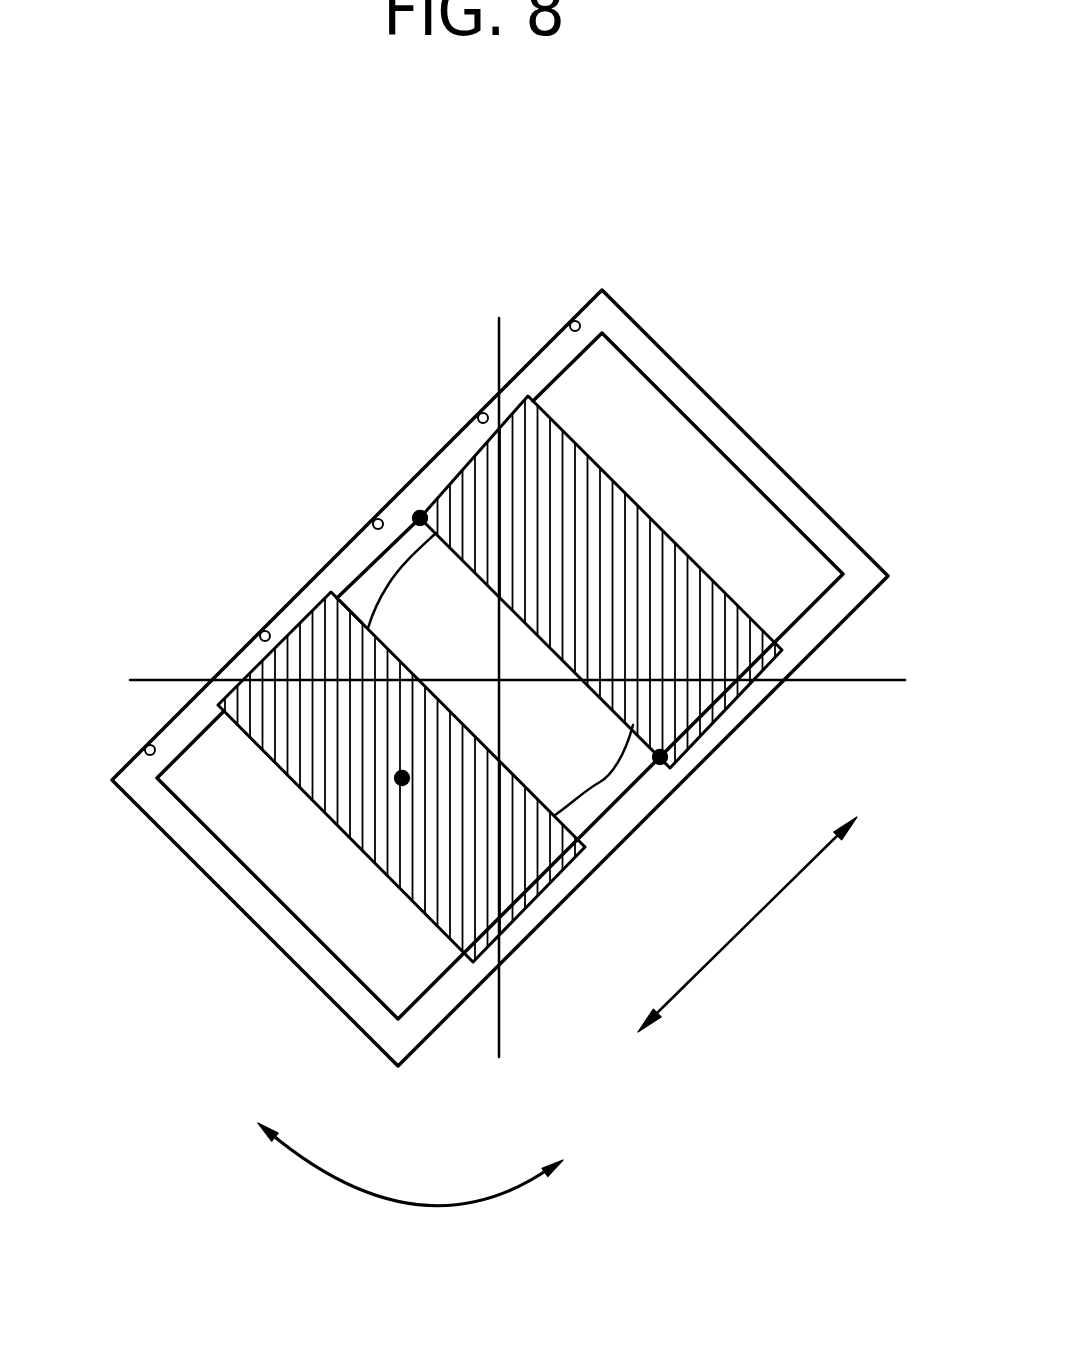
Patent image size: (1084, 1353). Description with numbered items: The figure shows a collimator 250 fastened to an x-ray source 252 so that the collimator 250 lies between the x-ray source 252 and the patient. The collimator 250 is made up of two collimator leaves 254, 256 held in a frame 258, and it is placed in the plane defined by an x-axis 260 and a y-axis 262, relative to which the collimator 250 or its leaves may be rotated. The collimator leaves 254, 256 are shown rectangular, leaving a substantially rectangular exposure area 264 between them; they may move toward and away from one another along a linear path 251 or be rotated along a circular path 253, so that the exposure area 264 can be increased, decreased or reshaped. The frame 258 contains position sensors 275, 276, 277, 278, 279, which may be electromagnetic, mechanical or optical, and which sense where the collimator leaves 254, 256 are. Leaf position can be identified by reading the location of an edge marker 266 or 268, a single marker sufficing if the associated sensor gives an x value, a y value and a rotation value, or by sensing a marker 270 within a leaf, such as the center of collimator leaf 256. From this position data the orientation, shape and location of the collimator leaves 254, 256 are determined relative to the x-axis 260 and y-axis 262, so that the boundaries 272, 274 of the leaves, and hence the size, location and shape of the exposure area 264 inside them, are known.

The collimator 250 is at (690, 452).
The linear path 251 is at (748, 932).
The x-ray source 252 is at (600, 782).
The circular path 253 is at (450, 1199).
The collimator leaf 254 is at (690, 715).
The collimator leaf 256 is at (520, 892).
The frame 258 is at (833, 610).
The x-axis 260 is at (853, 685).
The y-axis 262 is at (503, 348).
The exposure area 264 is at (400, 600).
The marker 266 is at (419, 512).
The marker 268 is at (660, 762).
The marker 270 is at (402, 780).
The boundary 272 is at (412, 512).
The boundary 274 is at (356, 612).
The position sensor 275 is at (148, 745).
The position sensor 276 is at (263, 631).
The position sensor 277 is at (378, 518).
The position sensor 278 is at (483, 412).
The position sensor 279 is at (578, 320).